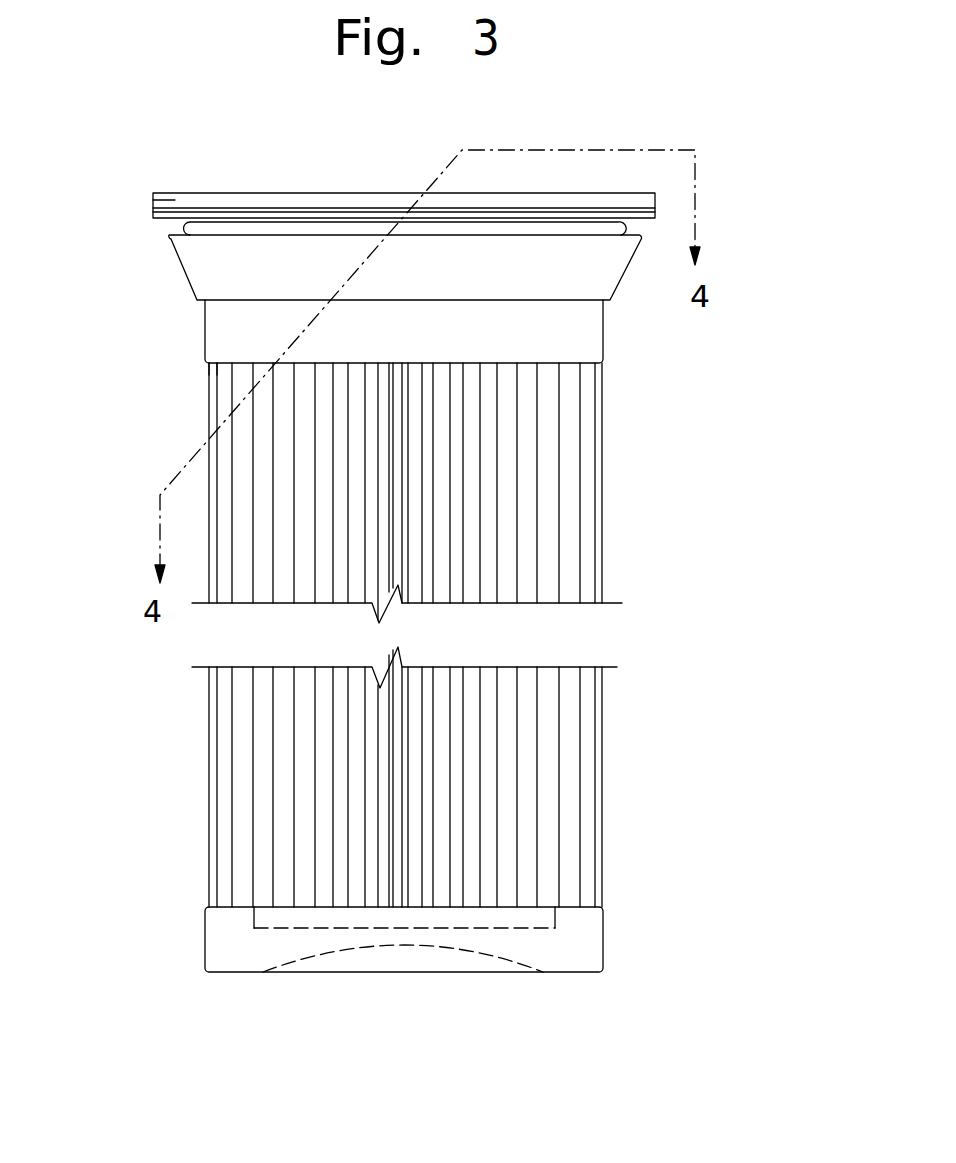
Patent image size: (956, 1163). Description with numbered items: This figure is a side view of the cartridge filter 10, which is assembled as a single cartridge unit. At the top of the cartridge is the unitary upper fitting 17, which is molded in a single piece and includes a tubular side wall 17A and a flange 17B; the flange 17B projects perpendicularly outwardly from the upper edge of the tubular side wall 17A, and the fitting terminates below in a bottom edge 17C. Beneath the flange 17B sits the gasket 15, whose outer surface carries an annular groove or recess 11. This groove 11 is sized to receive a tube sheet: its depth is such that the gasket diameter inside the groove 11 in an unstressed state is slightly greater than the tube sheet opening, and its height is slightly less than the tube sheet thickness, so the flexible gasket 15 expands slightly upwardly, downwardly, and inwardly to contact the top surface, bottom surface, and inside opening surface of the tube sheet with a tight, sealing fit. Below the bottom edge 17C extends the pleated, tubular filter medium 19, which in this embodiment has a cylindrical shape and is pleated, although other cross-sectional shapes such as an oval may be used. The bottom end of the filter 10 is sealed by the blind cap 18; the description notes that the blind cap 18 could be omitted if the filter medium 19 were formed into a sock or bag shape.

The cartridge filter 10 is at (658, 517).
The annular groove 11 is at (183, 231).
The gasket 15 is at (192, 287).
The unitary upper fitting 17 is at (255, 193).
The tubular side wall 17A is at (205, 332).
The flange 17B is at (153, 202).
The bottom edge 17C is at (222, 367).
The blind cap 18 is at (205, 940).
The pleated tubular filter medium 19 is at (205, 405).